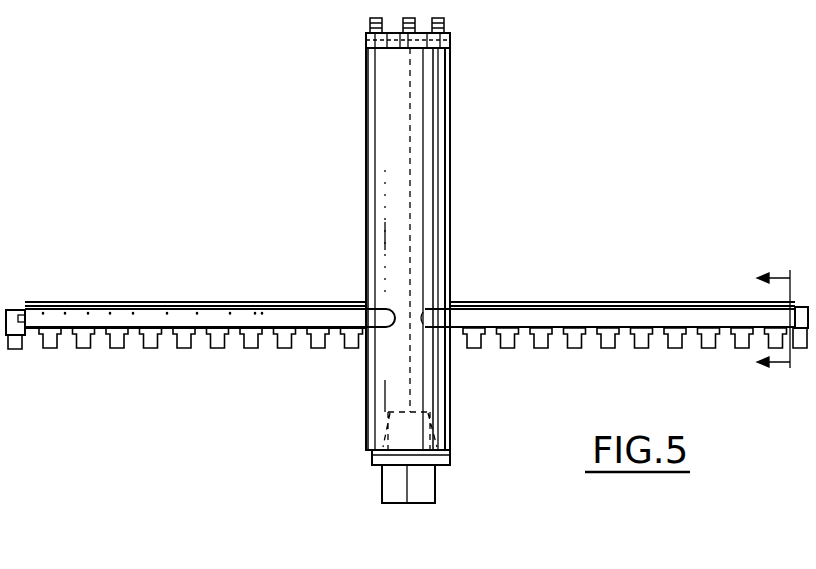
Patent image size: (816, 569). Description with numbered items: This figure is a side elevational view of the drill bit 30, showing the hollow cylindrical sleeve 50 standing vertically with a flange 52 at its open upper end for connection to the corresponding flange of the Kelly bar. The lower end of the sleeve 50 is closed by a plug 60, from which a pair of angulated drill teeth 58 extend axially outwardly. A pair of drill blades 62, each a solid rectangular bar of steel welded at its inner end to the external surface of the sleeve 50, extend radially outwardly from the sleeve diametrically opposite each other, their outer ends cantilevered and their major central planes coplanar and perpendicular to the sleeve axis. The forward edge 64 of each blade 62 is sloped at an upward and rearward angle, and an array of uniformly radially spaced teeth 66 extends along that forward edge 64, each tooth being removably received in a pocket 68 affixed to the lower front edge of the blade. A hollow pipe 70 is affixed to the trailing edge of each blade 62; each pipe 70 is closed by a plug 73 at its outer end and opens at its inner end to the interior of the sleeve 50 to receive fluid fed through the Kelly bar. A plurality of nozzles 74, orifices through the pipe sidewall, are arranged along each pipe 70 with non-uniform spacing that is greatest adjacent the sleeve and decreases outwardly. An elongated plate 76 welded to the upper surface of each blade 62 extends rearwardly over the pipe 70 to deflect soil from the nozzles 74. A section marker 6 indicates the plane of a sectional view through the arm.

The drill bit 30 is at (589, 191).
The hollow cylindrical sleeve 50 is at (447, 122).
The flange 52 is at (445, 45).
The angulated drill teeth 58 is at (418, 497).
The plug 60 is at (375, 458).
The drill blades 62 is at (600, 303).
The forward edge 64 is at (533, 318).
The teeth 66 is at (50, 348).
The pocket 68 is at (273, 342).
The hollow pipe 70 is at (321, 313).
The plug 73 is at (14, 310).
The nozzles 74 is at (110, 313).
The elongated plate 76 is at (208, 303).
The section line 6- 6 is at (762, 319).